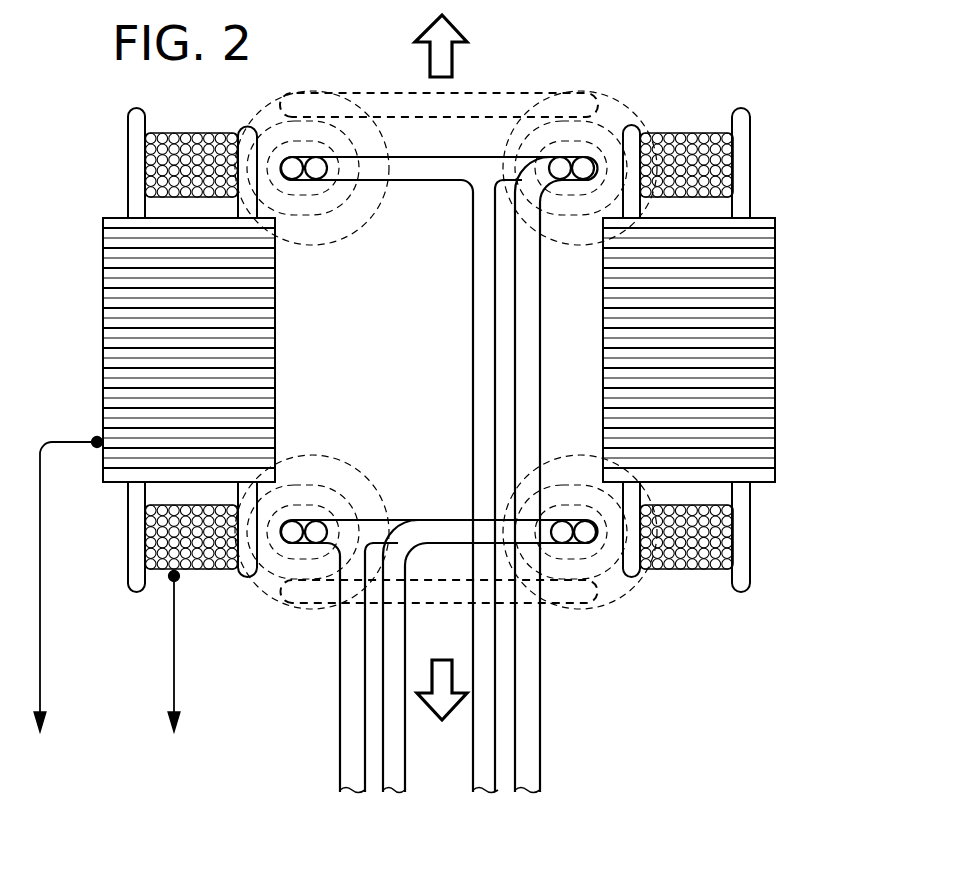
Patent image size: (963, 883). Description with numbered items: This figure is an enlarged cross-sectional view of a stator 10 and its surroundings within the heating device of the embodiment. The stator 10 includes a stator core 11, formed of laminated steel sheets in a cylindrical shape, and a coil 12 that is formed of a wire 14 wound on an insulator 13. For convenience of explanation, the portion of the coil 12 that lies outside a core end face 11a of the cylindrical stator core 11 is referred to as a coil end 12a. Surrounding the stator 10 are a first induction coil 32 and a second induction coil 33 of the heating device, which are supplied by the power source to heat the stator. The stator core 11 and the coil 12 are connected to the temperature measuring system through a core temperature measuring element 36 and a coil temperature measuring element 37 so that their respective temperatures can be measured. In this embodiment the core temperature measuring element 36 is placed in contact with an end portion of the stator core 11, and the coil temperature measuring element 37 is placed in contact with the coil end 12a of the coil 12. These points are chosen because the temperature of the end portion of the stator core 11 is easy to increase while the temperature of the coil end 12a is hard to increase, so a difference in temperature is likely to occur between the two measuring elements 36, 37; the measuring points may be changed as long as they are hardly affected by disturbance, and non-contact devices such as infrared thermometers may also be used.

The stator 10 is at (451, 404).
The stator core 11 is at (758, 220).
The core end face 11a is at (757, 482).
The coil 12 is at (473, 130).
The coil end 12a is at (671, 571).
The insulator 13 is at (742, 148).
The wire 14 is at (680, 131).
The first induction coil 32 is at (548, 160).
The second induction coil 33 is at (350, 712).
The core temperature measuring element 36 is at (70, 441).
The coil temperature measuring element 37 is at (177, 630).